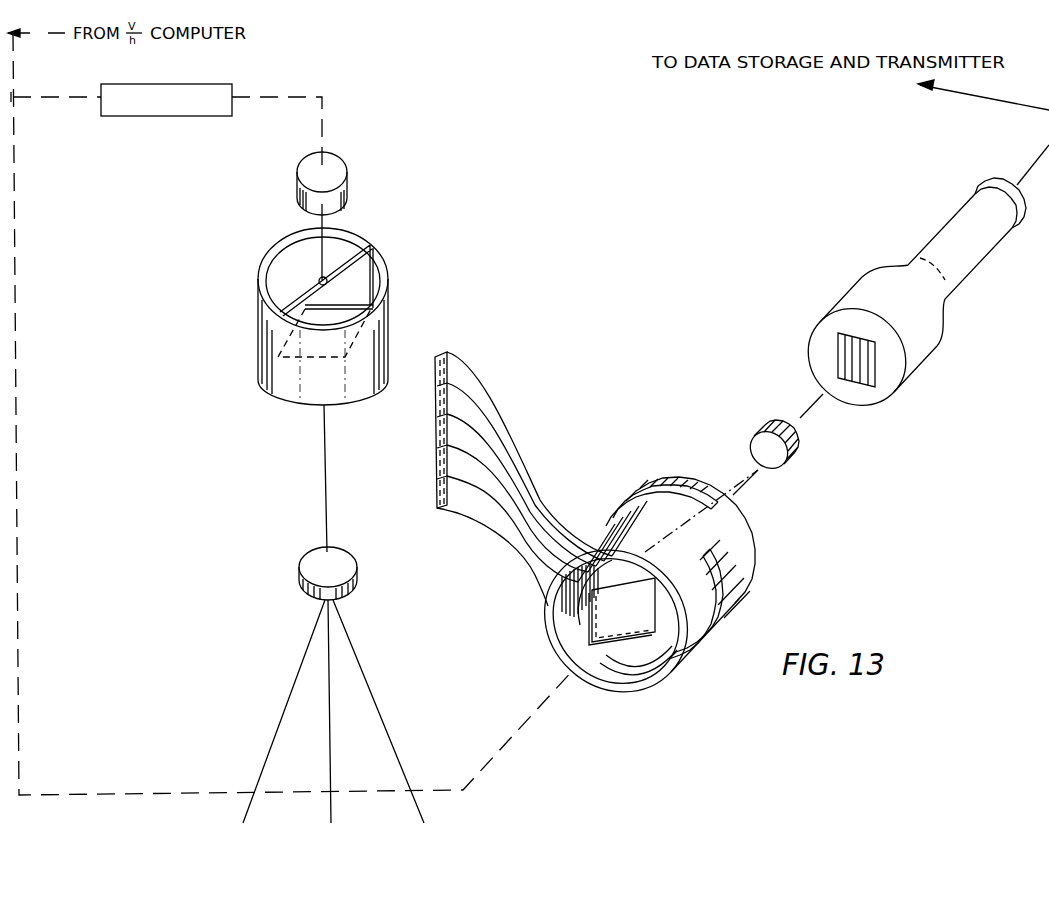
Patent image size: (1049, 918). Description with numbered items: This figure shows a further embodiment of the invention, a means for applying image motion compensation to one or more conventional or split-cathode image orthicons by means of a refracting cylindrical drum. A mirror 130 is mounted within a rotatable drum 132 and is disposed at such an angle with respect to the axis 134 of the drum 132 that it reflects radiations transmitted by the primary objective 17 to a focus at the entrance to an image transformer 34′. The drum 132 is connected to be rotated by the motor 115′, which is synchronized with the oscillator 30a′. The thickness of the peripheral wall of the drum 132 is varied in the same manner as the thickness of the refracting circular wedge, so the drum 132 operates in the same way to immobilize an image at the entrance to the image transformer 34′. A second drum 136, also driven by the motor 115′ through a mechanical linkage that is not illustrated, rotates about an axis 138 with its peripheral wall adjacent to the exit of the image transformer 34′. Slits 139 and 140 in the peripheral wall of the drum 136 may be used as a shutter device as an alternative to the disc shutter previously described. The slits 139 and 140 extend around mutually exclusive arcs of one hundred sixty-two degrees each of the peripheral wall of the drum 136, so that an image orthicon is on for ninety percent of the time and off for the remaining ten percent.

The oscillator 30a′ is at (230, 84).
The motor 115′ is at (347, 174).
The mirror 130 is at (321, 301).
The rotatable drum 132 is at (270, 382).
The axis of the drum 134 is at (330, 483).
The primary objective 17 is at (356, 571).
The image transformer 34′ is at (523, 568).
The second drum 136 is at (757, 553).
The axis 138 is at (556, 690).
The slit 139 is at (685, 492).
The slit 140 is at (725, 589).